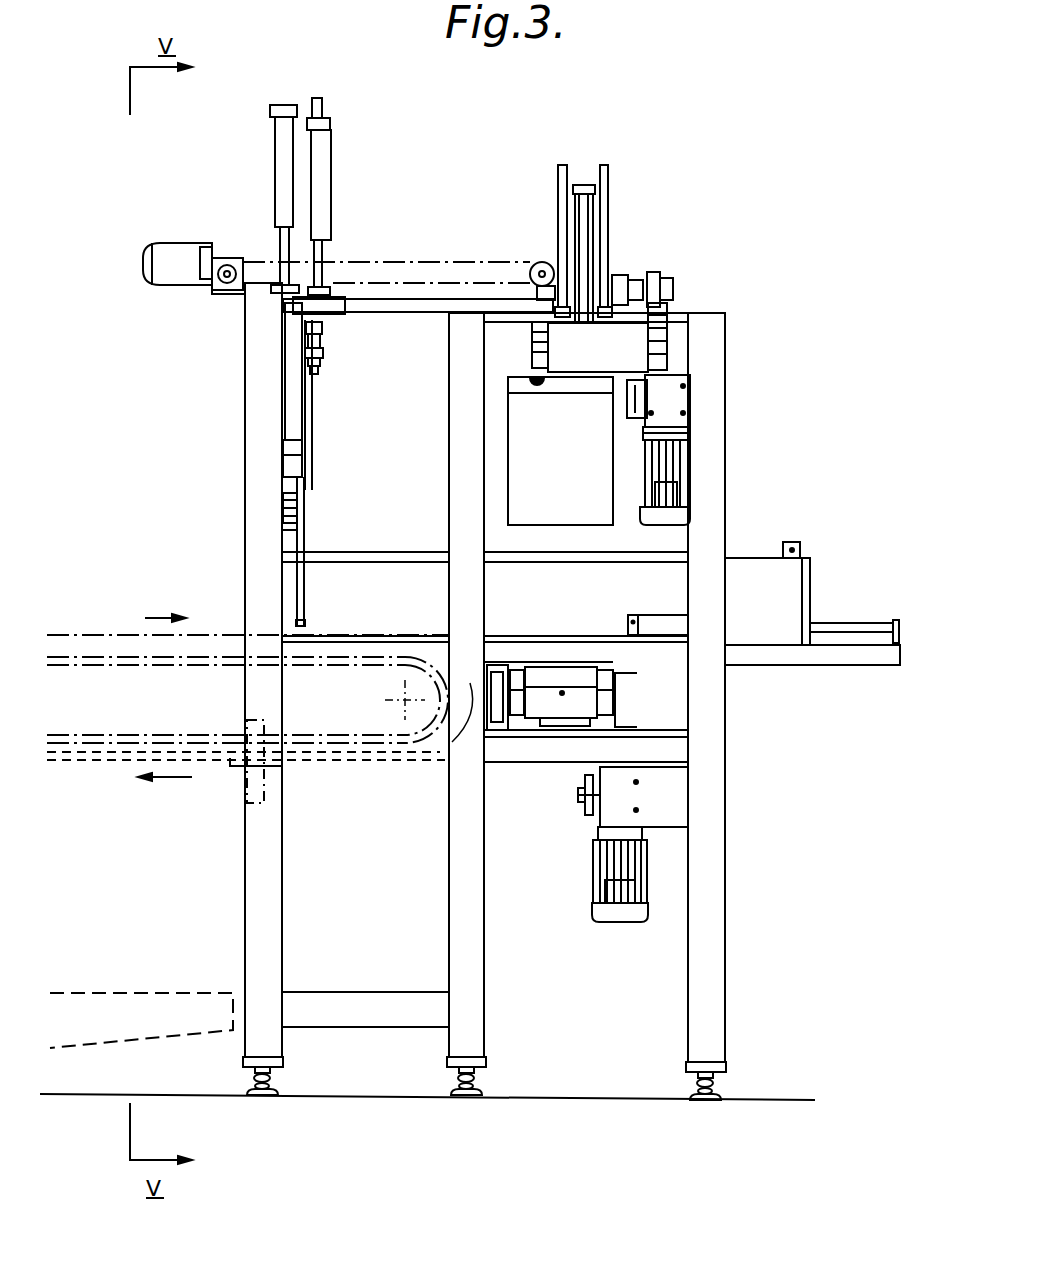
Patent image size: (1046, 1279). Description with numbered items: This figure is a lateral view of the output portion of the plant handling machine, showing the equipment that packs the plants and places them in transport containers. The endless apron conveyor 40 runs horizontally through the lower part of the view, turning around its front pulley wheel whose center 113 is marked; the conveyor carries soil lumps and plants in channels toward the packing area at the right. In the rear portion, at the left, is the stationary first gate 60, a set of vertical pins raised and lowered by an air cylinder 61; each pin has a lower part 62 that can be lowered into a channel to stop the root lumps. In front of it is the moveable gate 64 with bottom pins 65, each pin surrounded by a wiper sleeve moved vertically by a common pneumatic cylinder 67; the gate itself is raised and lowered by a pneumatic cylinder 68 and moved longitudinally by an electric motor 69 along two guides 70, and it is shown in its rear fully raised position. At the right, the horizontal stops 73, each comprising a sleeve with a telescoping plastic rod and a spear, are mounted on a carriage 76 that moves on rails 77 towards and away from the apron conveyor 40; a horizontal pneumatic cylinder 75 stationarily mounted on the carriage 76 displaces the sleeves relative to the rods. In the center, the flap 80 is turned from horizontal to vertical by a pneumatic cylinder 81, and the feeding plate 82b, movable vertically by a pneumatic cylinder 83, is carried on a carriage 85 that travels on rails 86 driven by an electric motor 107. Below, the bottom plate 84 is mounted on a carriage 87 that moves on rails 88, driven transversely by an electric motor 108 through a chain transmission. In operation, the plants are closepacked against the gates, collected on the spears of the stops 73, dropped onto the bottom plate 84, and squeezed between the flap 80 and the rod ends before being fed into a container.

The apron conveyor 40 is at (130, 635).
The first gate 60 is at (283, 538).
The air cylinder 61 is at (280, 152).
The lower part of pin 62 is at (302, 630).
The moveable gate 64 is at (307, 433).
The bottom pins 65 is at (303, 506).
The pneumatic cylinder 67 is at (316, 352).
The pneumatic cylinder 68 is at (332, 190).
The electric motor 69 is at (172, 249).
The guides 70 is at (416, 302).
The stops 73 is at (838, 641).
The horizontal pneumatic cylinder 75 is at (660, 626).
The carriage 76 is at (784, 581).
The rails 77 is at (757, 558).
The flap 80 is at (495, 665).
The pneumatic cylinder 81 is at (481, 682).
The feeding plate 82b is at (590, 474).
The pneumatic cylinder 83 is at (586, 216).
The bottom plate 84 is at (550, 667).
The carriage 85 is at (630, 333).
The rails 86 is at (534, 335).
The carriage 87 is at (540, 702).
The rails 88 is at (618, 688).
The electric motor 107 is at (690, 478).
The electric motor 108 is at (640, 876).
The center of front pulley wheel 113 is at (405, 705).